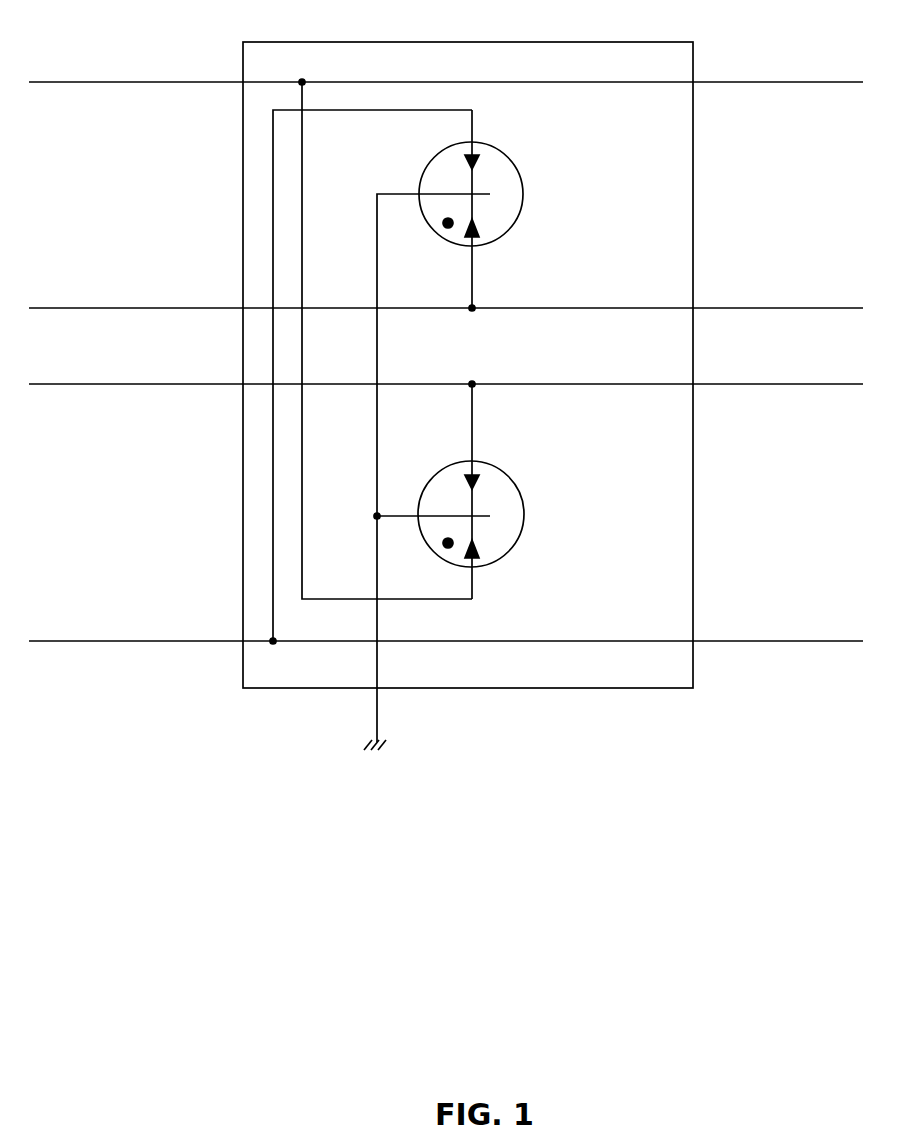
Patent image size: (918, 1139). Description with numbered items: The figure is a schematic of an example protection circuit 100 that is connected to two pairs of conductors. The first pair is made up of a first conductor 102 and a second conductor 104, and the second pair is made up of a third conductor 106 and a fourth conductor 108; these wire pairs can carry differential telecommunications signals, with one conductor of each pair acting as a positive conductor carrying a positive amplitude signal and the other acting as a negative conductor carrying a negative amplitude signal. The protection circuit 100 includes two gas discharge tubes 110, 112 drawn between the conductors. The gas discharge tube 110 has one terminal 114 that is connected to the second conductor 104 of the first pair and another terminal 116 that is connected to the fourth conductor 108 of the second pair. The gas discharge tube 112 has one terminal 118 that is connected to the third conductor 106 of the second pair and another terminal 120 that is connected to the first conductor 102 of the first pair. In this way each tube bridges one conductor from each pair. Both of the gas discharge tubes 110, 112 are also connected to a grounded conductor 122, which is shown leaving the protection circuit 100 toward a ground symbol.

The protection circuit 100 is at (612, 42).
The first conductor 102 is at (752, 82).
The second conductor 104 is at (750, 308).
The third conductor 106 is at (752, 384).
The fourth conductor 108 is at (738, 641).
The gas discharge tube 110 is at (522, 176).
The gas discharge tube 112 is at (520, 495).
The terminal 114 is at (474, 256).
The terminal 116 is at (474, 125).
The terminal 118 is at (474, 442).
The terminal 120 is at (474, 577).
The grounded conductor 122 is at (379, 722).